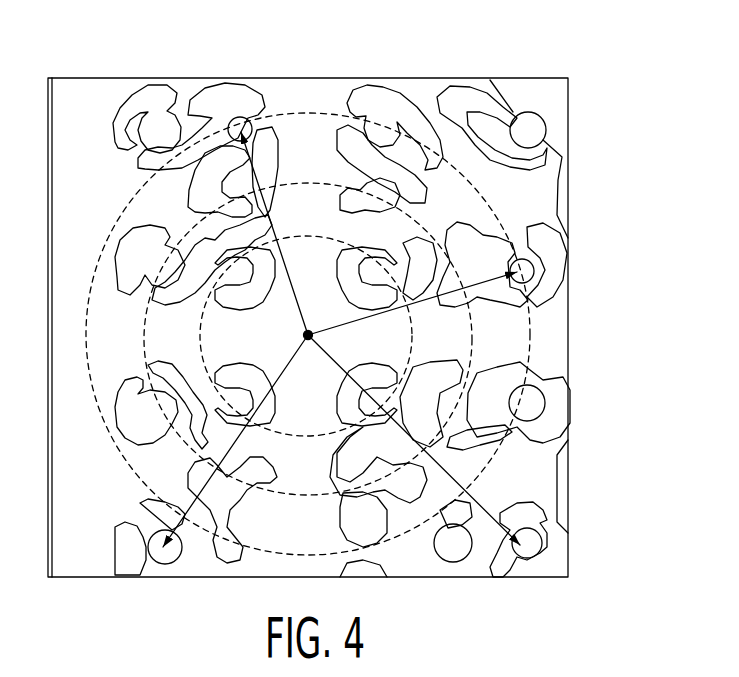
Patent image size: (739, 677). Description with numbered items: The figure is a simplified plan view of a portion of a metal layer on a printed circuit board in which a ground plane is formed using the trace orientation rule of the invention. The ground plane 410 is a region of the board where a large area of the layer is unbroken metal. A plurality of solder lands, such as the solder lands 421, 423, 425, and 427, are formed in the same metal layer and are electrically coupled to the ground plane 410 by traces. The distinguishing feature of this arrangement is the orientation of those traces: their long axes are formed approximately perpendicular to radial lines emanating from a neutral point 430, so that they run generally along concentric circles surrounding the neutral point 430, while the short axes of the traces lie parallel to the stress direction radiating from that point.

The ground plane 410 is at (300, 104).
The solder land 421 is at (156, 122).
The solder land 423 is at (536, 268).
The solder land 425 is at (148, 553).
The solder land 427 is at (527, 550).
The neutral point 430 is at (313, 338).